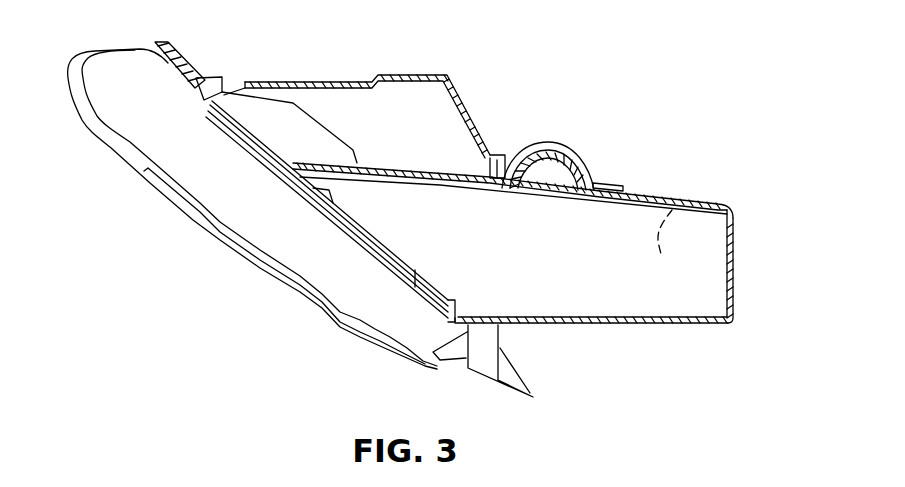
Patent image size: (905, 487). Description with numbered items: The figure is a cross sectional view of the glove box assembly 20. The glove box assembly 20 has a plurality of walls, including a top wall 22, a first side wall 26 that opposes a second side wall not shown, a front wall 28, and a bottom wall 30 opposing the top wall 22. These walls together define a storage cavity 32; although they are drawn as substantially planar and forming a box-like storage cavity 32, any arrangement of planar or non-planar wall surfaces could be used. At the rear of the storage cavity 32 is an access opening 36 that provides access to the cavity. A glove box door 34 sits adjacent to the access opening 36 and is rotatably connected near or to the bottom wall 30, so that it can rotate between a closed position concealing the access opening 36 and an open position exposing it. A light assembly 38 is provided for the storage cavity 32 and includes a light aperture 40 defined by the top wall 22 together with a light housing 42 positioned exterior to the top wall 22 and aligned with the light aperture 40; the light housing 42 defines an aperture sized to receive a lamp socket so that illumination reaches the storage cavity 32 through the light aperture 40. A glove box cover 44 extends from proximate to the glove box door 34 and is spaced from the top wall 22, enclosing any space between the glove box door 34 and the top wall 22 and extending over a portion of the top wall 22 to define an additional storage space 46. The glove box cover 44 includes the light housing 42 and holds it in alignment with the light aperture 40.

The glove box assembly 20 is at (423, 210).
The top wall 22 is at (700, 202).
The first side wall 26 is at (674, 203).
The front wall 28 is at (734, 265).
The bottom wall 30 is at (663, 325).
The storage cavity 32 is at (560, 290).
The glove box door 34 is at (270, 225).
The access opening 36 is at (383, 236).
The light assembly 38 is at (592, 173).
The light aperture 40 is at (547, 190).
The light housing 42 is at (558, 147).
The glove box cover 44 is at (410, 75).
The additional storage space 46 is at (350, 110).